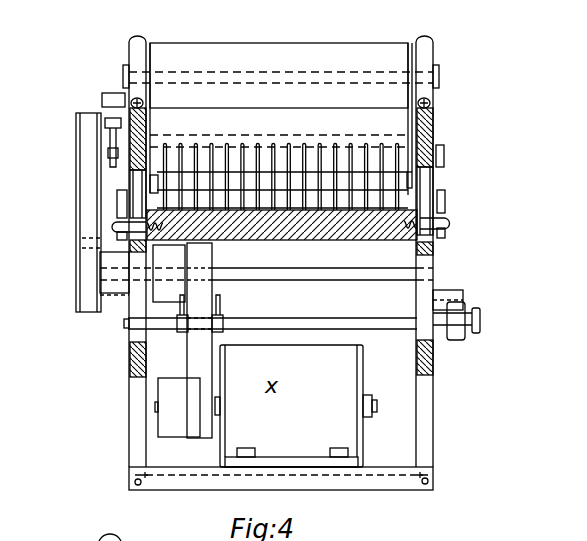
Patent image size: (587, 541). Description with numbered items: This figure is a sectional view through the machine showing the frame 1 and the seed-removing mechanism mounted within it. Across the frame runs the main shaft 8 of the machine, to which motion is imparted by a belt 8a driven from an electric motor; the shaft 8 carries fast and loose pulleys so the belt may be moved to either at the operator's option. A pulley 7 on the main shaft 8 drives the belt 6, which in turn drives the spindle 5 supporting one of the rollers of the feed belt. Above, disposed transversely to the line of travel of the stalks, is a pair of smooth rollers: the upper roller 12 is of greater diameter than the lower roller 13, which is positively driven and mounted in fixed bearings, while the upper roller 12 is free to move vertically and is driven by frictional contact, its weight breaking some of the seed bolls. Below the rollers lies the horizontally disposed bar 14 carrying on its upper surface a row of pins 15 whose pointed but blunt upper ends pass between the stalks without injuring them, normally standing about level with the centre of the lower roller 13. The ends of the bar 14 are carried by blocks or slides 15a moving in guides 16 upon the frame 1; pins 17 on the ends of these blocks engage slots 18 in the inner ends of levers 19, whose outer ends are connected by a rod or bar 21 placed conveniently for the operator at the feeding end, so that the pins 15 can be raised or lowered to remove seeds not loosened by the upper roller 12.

The frame 1 is at (130, 127).
The spindle 5 is at (187, 133).
The belt 6 is at (77, 242).
The pulley 7 is at (77, 307).
The main shaft 8 is at (295, 273).
The belt / fast pulley 8a is at (193, 353).
The upper roller 12 is at (272, 43).
The lower roller 13 is at (400, 125).
The bar 14 is at (285, 232).
The pins 15 is at (305, 143).
The blocks or slides 15a is at (455, 260).
The guides 16 is at (108, 140).
The pins 17 is at (112, 228).
The slots 18 is at (115, 223).
The levers 19 is at (127, 195).
The rod or bar 21 is at (118, 165).